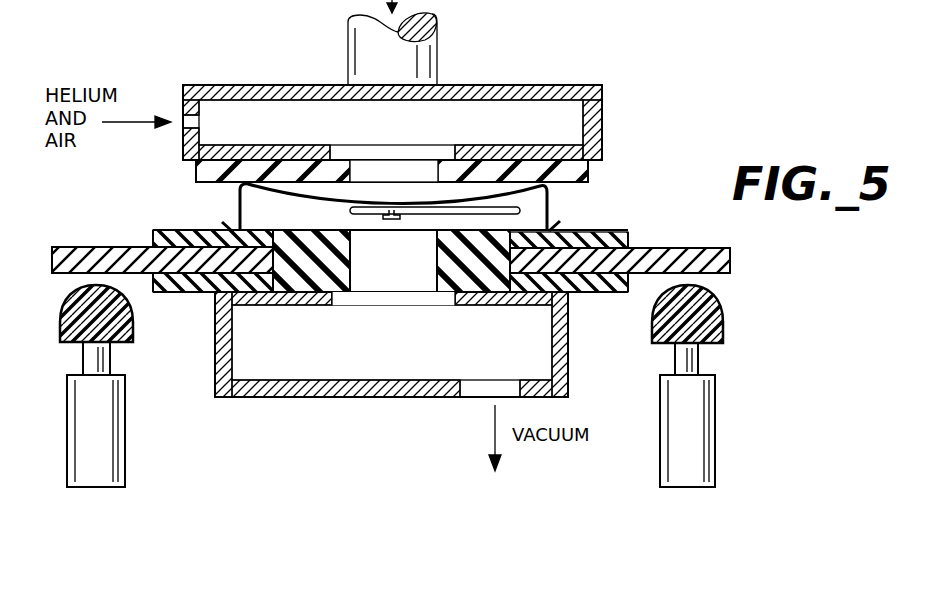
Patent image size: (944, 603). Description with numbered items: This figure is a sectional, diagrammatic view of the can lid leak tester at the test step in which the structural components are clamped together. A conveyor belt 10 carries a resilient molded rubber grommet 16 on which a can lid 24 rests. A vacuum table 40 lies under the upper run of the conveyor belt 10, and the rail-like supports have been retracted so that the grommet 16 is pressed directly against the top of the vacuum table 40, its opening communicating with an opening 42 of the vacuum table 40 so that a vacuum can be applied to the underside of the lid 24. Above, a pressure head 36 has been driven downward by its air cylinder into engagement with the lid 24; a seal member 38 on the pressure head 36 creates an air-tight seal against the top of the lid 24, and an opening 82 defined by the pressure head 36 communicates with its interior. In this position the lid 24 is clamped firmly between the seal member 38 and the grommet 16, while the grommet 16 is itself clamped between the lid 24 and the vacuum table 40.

The conveyor belt 10 is at (85, 247).
The grommet 16 is at (590, 232).
The can lid 24 is at (237, 205).
The pressure head 36 is at (480, 85).
The seal member 38 is at (590, 173).
The opening 82 is at (390, 170).
The vacuum table 40 is at (290, 397).
The vacuum table opening 42 is at (402, 305).